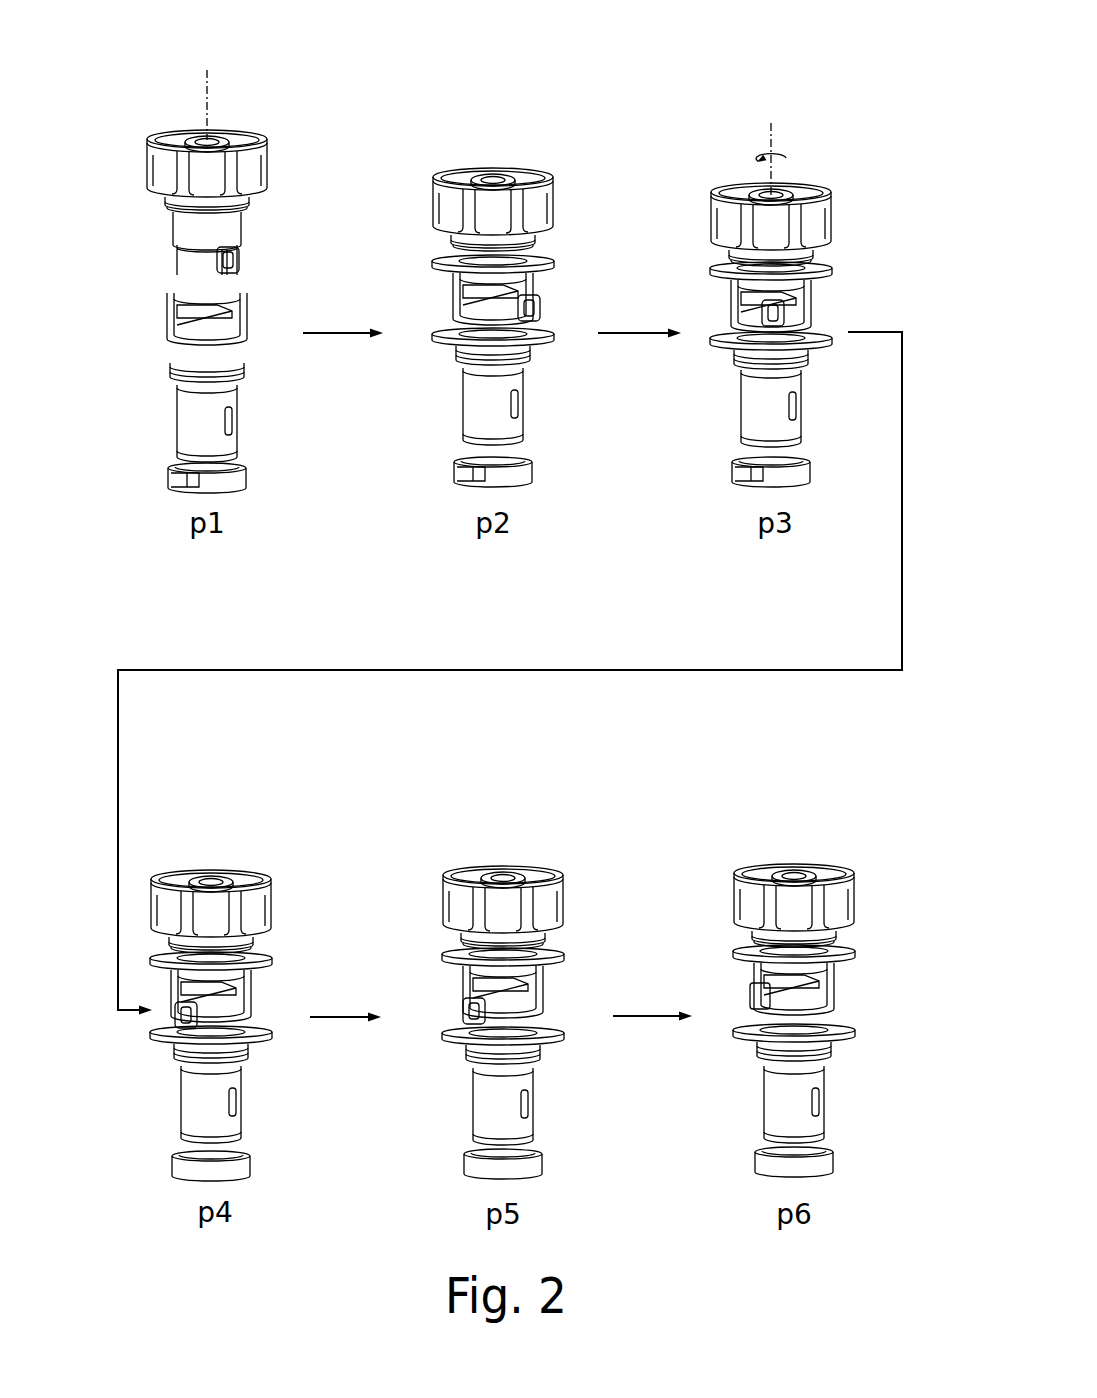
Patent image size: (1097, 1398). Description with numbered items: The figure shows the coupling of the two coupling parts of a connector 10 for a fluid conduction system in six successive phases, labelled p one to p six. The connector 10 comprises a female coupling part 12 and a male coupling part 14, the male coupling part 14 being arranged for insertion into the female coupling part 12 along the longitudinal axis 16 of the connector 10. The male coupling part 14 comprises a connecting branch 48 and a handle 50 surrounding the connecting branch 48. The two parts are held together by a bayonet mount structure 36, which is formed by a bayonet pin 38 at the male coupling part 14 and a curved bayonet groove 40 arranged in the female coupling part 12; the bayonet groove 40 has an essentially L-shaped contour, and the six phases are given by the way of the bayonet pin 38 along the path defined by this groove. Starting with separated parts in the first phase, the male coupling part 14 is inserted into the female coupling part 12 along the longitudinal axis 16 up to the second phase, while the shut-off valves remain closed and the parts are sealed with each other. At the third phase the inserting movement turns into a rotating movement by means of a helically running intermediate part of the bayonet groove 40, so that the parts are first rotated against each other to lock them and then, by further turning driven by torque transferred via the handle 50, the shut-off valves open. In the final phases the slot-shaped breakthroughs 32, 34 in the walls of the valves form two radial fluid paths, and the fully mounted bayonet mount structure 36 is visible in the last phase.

The connector 10 is at (884, 140).
The female coupling part 12 is at (150, 424).
The male coupling part 14 is at (150, 233).
The longitudinal axis 16 is at (210, 80).
The slot-shaped breakthrough 32 is at (250, 426).
The slot-shaped breakthrough 34 is at (546, 1107).
The bayonet mount structure 36 is at (566, 330).
The bayonet pin 38 is at (248, 258).
The curved bayonet groove 40 is at (158, 322).
The connecting branch 48 is at (198, 136).
The handle 50 is at (256, 131).